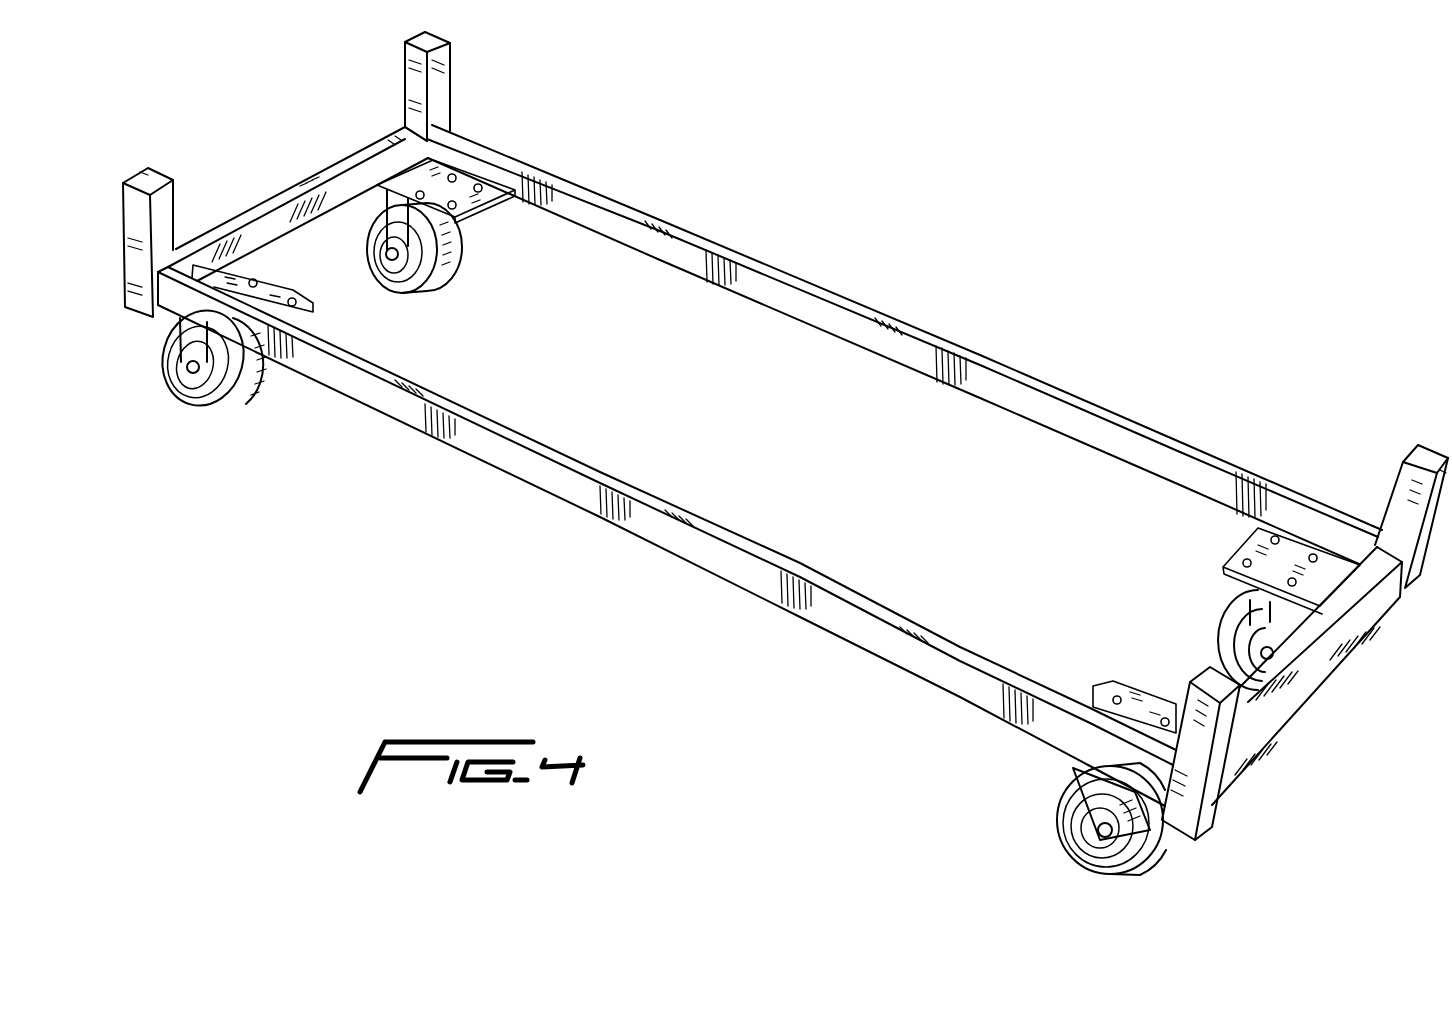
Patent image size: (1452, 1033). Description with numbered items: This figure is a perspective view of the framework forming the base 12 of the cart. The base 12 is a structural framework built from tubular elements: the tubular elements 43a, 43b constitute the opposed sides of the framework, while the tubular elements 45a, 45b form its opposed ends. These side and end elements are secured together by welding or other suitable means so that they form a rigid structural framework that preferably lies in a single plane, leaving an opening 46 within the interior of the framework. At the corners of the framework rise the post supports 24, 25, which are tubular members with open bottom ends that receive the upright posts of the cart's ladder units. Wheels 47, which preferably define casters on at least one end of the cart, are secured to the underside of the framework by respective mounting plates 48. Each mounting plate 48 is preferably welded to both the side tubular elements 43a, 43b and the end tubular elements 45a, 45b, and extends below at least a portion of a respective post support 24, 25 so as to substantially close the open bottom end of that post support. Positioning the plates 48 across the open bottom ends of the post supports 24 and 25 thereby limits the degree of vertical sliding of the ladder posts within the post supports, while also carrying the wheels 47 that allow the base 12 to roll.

The base 12 is at (785, 453).
The post support 24 is at (178, 208).
The post support 25 is at (438, 92).
The tubular element 43a is at (663, 537).
The tubular element 43b is at (795, 288).
The tubular element 45a is at (333, 170).
The tubular element 45b is at (1307, 685).
The opening 46 is at (820, 437).
The wheel 47 is at (462, 248).
The mounting plate 48 is at (283, 290).